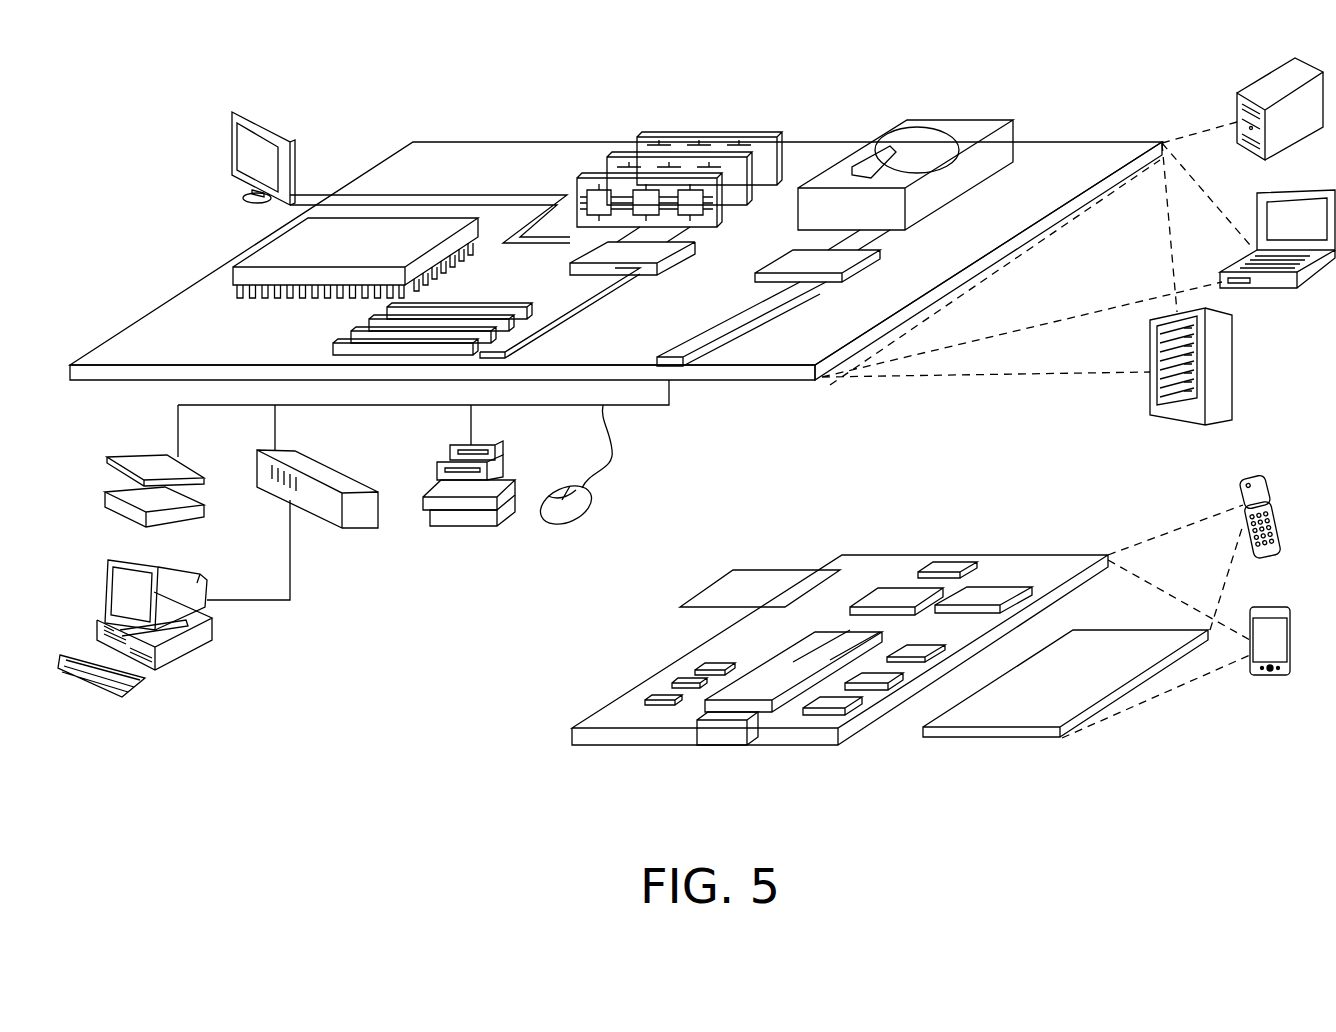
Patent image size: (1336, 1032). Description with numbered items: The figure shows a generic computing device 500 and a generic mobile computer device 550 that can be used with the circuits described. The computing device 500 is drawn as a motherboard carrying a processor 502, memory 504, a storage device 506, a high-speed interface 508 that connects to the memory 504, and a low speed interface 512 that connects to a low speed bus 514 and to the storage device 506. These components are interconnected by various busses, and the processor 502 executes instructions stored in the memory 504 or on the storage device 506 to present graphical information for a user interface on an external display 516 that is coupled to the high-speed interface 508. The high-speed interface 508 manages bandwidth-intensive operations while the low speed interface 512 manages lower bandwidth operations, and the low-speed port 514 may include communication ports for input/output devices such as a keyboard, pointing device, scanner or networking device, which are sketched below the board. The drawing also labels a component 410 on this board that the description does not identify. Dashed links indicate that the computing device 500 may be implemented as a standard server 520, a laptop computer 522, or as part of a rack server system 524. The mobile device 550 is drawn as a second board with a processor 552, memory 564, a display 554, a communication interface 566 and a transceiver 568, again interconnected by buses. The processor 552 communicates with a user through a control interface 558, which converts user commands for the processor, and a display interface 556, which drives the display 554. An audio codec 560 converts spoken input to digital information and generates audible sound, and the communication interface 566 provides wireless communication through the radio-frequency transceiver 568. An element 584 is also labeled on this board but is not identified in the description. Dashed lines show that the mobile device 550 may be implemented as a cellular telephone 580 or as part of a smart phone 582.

The computing device 500 is at (369, 93).
The display 516 is at (235, 110).
The processor 502 is at (263, 248).
The memory modules 410 is at (359, 326).
The memory 504 is at (713, 136).
The storage device 506 is at (947, 118).
The high-speed interface 508 is at (645, 252).
The low speed interface 512 is at (790, 258).
The low-speed expansion port 514 is at (678, 352).
The standard server 520 is at (1258, 87).
The laptop computer 522 is at (1311, 190).
The rack server system 524 is at (1233, 367).
The mobile computer device 550 is at (1145, 733).
The processor 552 is at (765, 677).
The display 554 is at (1108, 643).
The display interface 556 is at (842, 702).
The control interface 558 is at (880, 677).
The audio codec 560 is at (923, 640).
The memory 564 is at (677, 683).
The communication interface 566 is at (897, 588).
The transceiver 568 is at (988, 592).
The cellular telephone 580 is at (948, 565).
The smart phone 582 is at (820, 570).
The antenna 584 is at (733, 570).